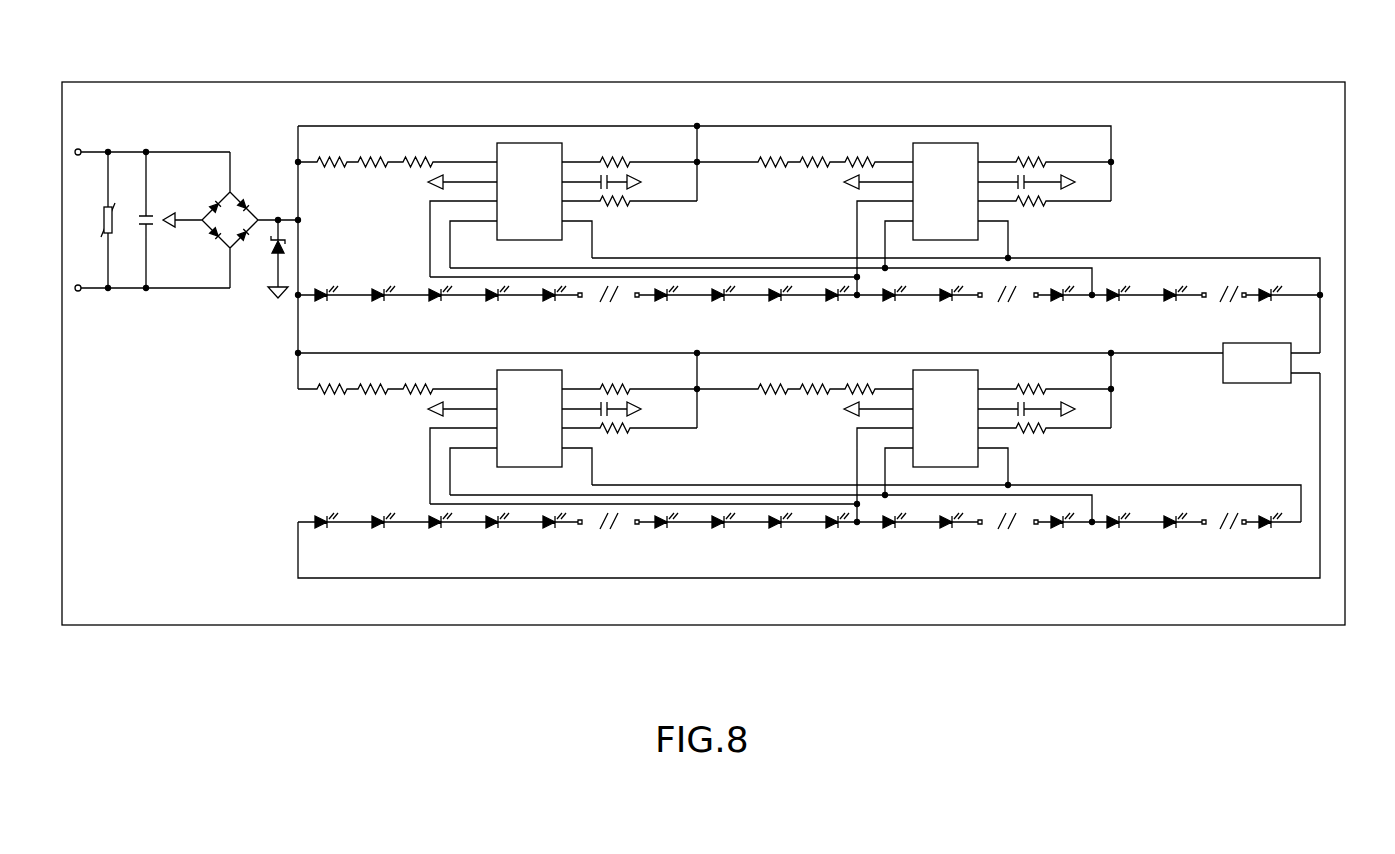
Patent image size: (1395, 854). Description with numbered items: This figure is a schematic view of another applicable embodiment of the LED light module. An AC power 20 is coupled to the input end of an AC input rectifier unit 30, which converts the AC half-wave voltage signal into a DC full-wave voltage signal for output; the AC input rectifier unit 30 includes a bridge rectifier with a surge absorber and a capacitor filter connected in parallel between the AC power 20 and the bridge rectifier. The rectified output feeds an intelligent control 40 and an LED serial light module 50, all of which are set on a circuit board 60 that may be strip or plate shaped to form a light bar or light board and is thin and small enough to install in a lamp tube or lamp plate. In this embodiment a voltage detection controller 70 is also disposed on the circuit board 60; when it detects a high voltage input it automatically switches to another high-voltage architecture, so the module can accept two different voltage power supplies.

The AC power 20 is at (78, 150).
The AC input rectifier unit 30 is at (180, 146).
The intelligent control 40 is at (523, 157).
The LED serial light module 50 is at (665, 550).
The circuit board 60 is at (1102, 593).
The voltage detection controller 70 is at (1248, 375).